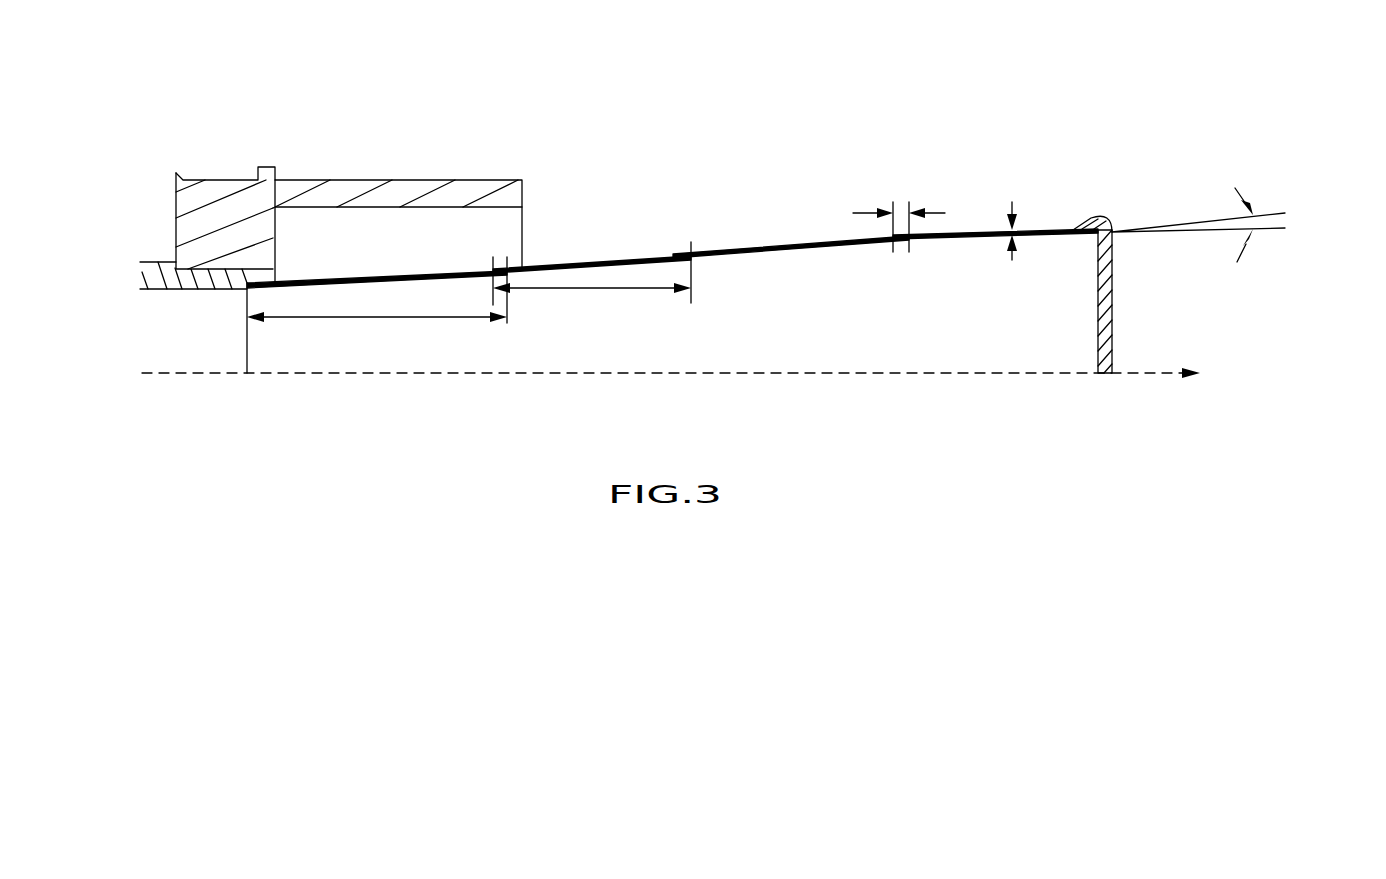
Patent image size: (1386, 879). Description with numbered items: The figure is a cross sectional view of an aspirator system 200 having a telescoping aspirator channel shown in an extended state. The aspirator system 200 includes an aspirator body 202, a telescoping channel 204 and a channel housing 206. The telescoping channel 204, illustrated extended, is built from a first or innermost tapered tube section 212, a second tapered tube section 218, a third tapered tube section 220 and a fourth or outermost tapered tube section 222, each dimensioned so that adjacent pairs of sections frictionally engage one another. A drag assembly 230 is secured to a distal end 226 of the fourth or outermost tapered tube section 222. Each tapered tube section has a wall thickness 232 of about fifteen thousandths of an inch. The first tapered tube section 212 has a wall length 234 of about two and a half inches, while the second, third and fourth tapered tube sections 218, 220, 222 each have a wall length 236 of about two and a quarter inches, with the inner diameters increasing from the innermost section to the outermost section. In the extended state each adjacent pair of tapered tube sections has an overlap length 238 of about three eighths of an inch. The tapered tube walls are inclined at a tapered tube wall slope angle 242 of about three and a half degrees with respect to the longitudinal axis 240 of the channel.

The aspirator system 200 is at (1022, 80).
The aspirator body 202 is at (152, 273).
The telescoping channel 204 is at (730, 172).
The channel housing 206 is at (478, 193).
The first or innermost tapered tube section 212 is at (355, 279).
The second tapered tube section 218 is at (587, 260).
The third tapered tube section 220 is at (789, 244).
The fourth or outermost tapered tube section 222 is at (975, 233).
The distal end 226 is at (1057, 230).
The drag assembly 230 is at (1150, 321).
The wall thickness 232 is at (1012, 260).
The wall length 234 is at (369, 321).
The wall length 236 is at (600, 292).
The overlap length 238 is at (935, 213).
The longitudinal axis 240 is at (1143, 376).
The tapered tube wall slope angle 242 is at (1275, 222).